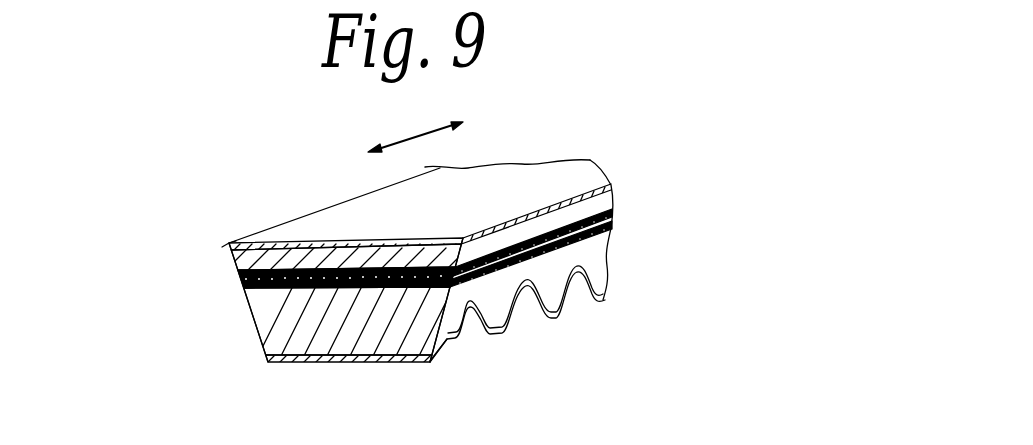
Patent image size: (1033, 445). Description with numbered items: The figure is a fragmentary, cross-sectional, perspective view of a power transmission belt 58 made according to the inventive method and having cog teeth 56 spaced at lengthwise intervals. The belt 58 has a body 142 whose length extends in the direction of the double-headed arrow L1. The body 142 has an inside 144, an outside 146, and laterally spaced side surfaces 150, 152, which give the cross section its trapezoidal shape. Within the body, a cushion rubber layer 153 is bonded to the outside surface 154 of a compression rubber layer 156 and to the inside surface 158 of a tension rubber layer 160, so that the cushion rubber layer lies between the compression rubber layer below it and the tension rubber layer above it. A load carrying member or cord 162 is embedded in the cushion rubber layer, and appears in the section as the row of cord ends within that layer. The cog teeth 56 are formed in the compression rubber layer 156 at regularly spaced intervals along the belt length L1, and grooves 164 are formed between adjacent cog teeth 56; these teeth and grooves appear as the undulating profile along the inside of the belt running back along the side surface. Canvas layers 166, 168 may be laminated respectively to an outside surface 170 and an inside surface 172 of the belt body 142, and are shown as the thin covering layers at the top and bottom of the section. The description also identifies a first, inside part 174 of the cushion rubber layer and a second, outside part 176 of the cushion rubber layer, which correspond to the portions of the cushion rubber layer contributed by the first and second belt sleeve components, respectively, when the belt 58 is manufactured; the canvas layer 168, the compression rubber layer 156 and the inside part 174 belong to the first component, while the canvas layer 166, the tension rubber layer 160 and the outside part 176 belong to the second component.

The power transmission belt 58 is at (376, 261).
The cog teeth 56 is at (527, 314).
The body 142 is at (251, 297).
The inside 144 is at (356, 334).
The outside 146 is at (409, 174).
The side surface 150 is at (298, 333).
The side surface 152 is at (648, 230).
The cushion rubber layer 153 is at (281, 317).
The outside surface of compression rubber layer 154 is at (531, 232).
The compression rubber layer 156 is at (347, 329).
The inside surface of tension rubber layer 158 is at (536, 214).
The tension rubber layer 160 is at (281, 214).
The load carrying member/cord 162 is at (199, 215).
The grooves 164 is at (480, 361).
The canvas layer 166 is at (376, 176).
The canvas layer 168 is at (354, 392).
The outside surface of belt body 170 is at (356, 214).
The inside surface of belt body 172 is at (356, 320).
The first inside part of cushion rubber layer 174 is at (215, 333).
The second outside part of cushion rubber layer 176 is at (297, 230).
The belt length direction L1 is at (415, 122).